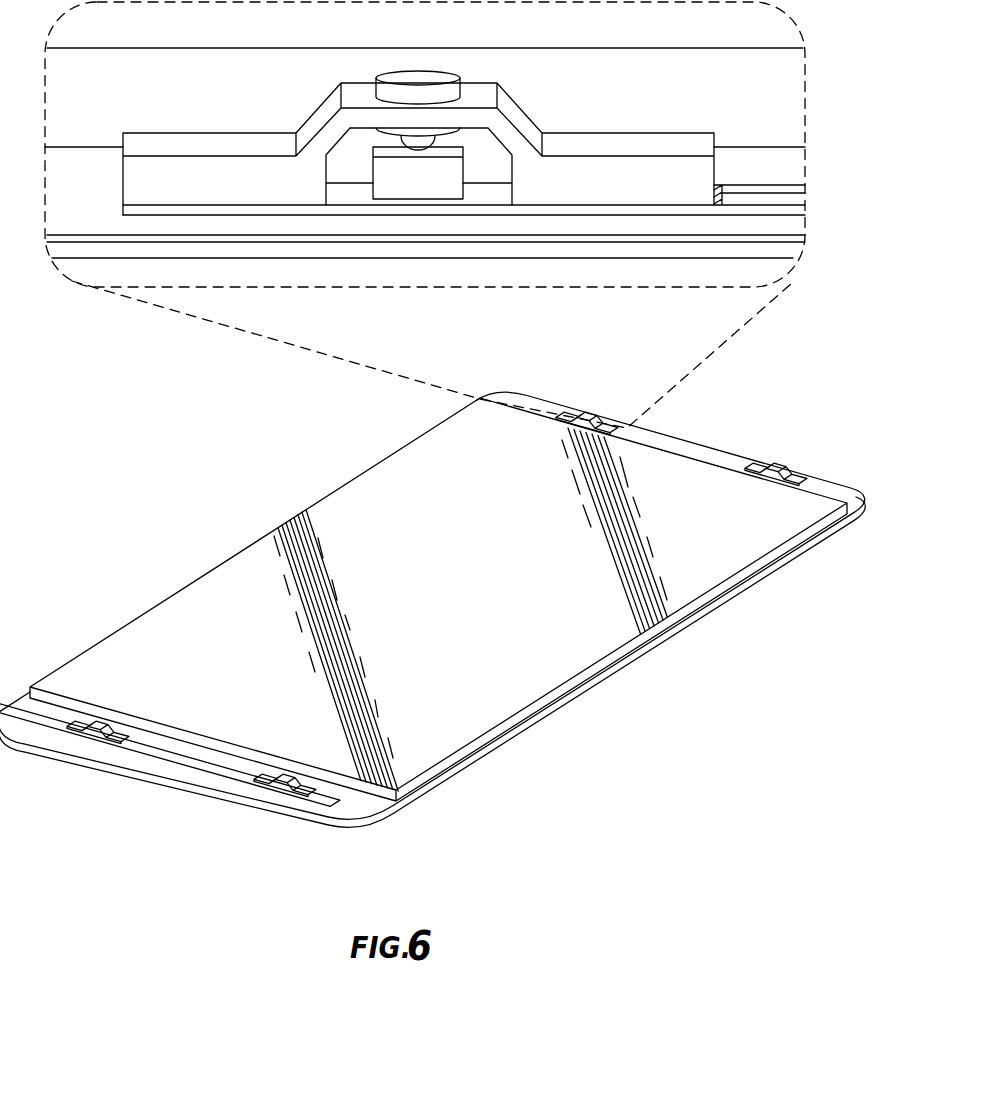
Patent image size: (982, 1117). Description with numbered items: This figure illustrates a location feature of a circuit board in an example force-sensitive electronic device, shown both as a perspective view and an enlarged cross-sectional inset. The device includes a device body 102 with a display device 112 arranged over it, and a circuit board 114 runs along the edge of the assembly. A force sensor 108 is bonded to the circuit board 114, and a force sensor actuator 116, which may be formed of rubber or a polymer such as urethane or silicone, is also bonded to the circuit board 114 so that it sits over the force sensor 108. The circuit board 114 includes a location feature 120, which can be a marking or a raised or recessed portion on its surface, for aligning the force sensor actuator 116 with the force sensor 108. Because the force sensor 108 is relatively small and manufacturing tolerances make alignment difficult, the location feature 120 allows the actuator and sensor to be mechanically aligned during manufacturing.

The device body 102 is at (373, 813).
The force sensor 108 is at (424, 180).
The display device 112 is at (682, 593).
The circuit board 114 is at (170, 758).
The force sensor actuator 116 is at (280, 800).
The location feature 120 is at (725, 193).